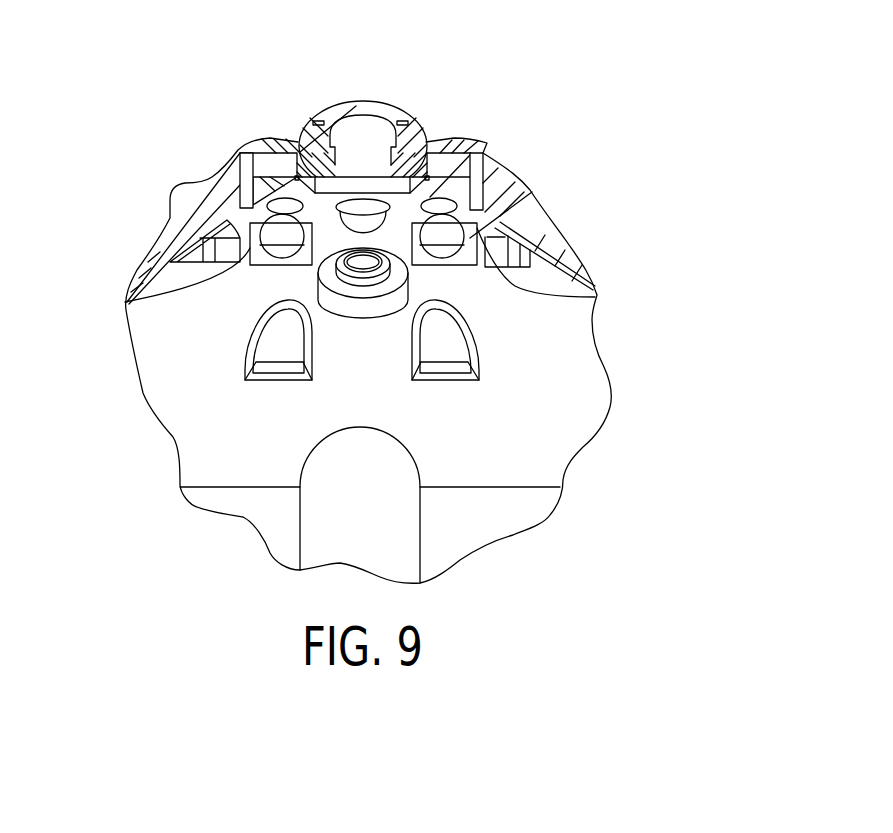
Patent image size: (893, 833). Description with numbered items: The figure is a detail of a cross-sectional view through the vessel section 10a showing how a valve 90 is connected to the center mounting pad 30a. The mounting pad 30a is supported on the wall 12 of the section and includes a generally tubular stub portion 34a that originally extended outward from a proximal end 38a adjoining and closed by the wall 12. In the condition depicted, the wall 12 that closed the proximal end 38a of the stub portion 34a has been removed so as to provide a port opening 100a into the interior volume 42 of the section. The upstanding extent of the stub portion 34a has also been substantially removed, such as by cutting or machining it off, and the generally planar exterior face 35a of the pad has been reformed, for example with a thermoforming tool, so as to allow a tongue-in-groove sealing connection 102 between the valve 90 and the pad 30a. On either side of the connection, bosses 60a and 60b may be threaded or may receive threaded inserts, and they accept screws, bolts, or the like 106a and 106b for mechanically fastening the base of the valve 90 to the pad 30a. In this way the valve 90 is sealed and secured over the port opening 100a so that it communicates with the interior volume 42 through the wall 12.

The drill bit body 10a is at (717, 228).
The wall 12 is at (418, 243).
The center mounting pad 30a is at (525, 203).
The stub portion 34a is at (427, 140).
The exterior face 35a is at (267, 138).
The proximal end 38a is at (352, 178).
The interior volume 42 is at (530, 436).
The boss 60a is at (127, 302).
The boss 60b is at (597, 297).
The valve 90 is at (420, 150).
The port opening 100a is at (340, 195).
The tongue-in-groove sealing connection 102 is at (322, 160).
The screw or bolt 106a is at (300, 160).
The screw or bolt 106b is at (487, 147).